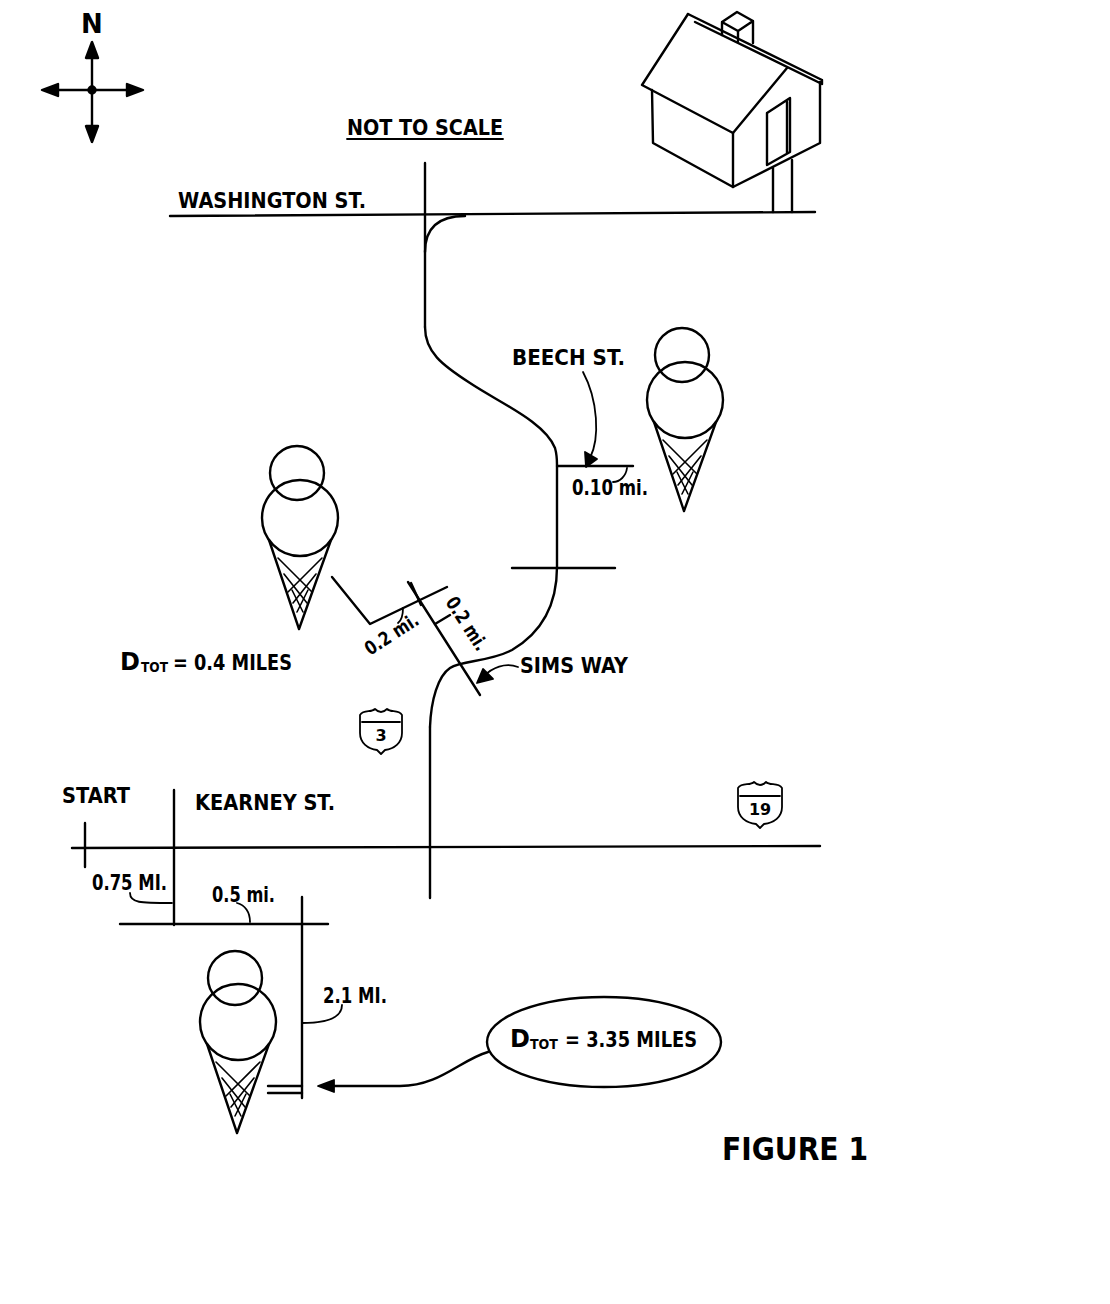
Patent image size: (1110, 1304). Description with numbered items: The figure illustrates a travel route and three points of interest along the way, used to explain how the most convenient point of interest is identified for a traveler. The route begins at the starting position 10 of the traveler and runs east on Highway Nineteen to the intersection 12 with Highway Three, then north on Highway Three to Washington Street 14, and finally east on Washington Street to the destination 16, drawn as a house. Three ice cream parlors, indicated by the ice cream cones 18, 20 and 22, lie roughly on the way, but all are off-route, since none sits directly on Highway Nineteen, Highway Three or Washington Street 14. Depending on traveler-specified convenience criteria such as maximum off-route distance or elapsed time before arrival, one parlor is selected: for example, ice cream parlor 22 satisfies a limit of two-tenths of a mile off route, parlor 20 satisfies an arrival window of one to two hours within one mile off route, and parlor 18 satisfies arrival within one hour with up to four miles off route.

The starting position 10 is at (87, 848).
The intersection 12 is at (432, 846).
The Washington Street 14 is at (430, 215).
The destination 16 is at (800, 72).
The ice cream cone 18 is at (198, 1019).
The ice cream cone 20 is at (260, 516).
The ice cream cone 22 is at (725, 401).